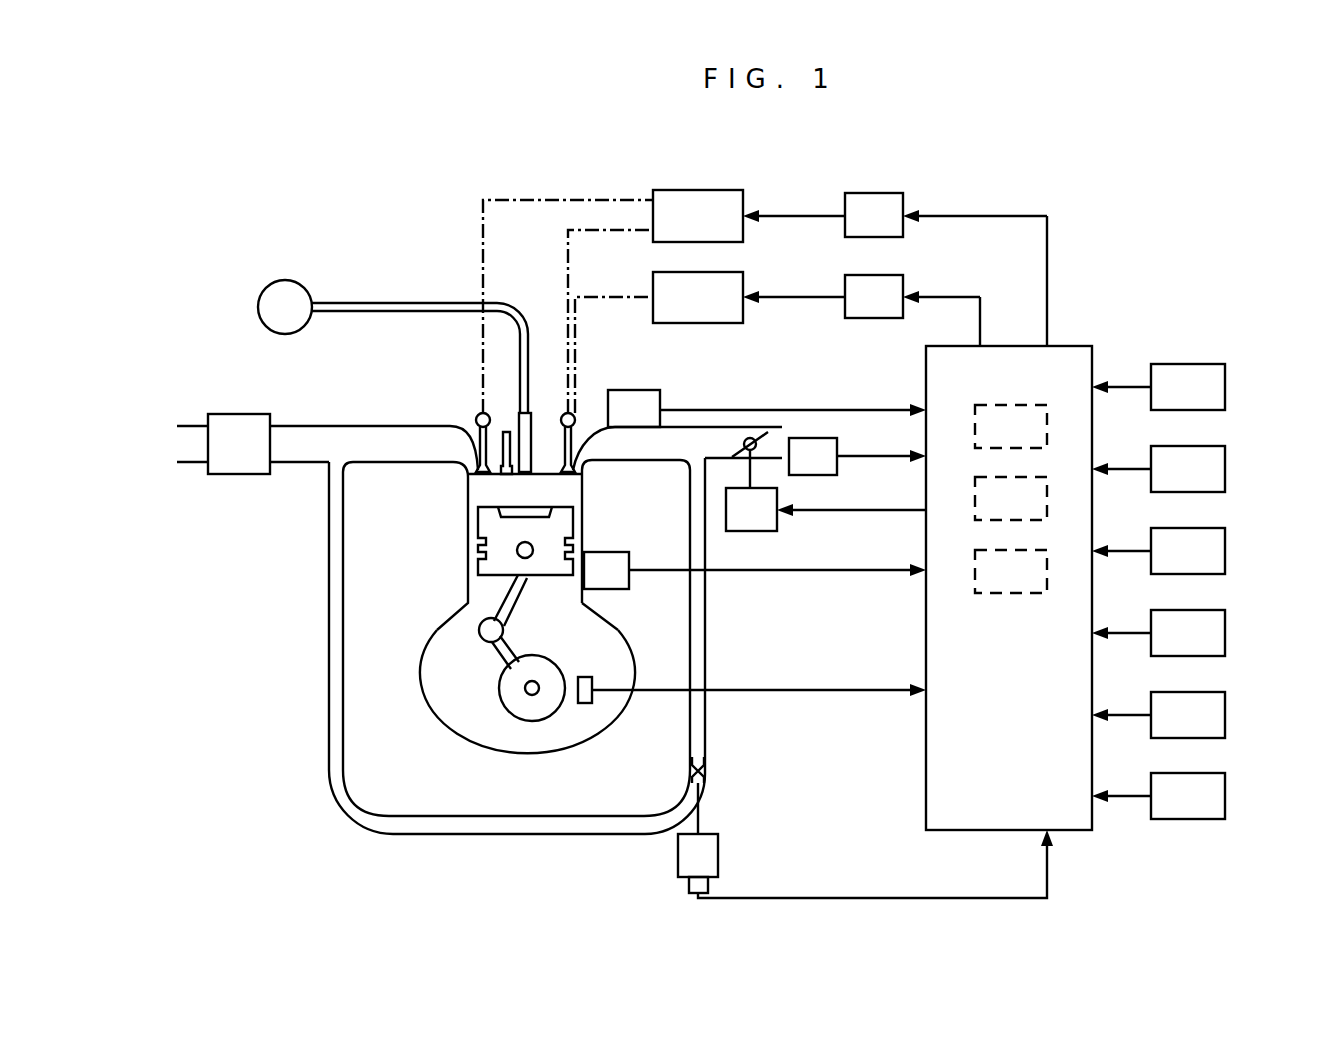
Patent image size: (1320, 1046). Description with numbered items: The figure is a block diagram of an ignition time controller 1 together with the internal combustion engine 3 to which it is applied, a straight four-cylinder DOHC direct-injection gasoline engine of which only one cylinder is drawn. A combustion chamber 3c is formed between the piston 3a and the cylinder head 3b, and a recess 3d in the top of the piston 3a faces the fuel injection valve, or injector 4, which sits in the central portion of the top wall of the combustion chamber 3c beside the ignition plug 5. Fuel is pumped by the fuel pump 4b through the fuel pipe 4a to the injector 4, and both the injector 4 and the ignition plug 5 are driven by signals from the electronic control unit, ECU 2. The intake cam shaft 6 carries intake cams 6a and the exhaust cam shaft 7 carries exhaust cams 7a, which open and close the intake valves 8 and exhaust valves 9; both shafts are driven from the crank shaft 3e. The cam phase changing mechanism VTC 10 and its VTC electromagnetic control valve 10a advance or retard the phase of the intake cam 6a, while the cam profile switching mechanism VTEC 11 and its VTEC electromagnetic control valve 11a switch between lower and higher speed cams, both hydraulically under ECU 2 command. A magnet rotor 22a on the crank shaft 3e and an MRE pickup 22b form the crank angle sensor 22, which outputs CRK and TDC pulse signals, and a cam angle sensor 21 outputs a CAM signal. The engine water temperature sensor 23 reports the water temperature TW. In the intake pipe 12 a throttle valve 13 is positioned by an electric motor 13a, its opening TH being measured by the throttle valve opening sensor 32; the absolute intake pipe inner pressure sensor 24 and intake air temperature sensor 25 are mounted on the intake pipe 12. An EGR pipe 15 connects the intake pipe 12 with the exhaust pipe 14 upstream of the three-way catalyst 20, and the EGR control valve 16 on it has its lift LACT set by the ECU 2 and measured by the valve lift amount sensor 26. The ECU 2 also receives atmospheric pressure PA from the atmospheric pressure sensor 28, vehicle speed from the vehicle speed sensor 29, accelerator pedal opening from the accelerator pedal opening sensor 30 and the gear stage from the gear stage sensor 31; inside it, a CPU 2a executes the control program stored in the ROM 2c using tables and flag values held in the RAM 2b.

The control system 1 is at (1115, 171).
The electronic control unit (ECU) 2 is at (978, 559).
The CPU 2a is at (1034, 551).
The RAM 2b is at (1034, 477).
The ROM 2c is at (1034, 406).
The internal combustion engine 3 is at (503, 696).
The piston 3a is at (476, 559).
The cylinder head 3b is at (563, 545).
The combustion chamber 3c is at (477, 488).
The recess 3d is at (476, 526).
The crank shaft 3e is at (466, 681).
The fuel injection valve (injector) 4 is at (535, 398).
The fuel pipe 4a is at (285, 276).
The fuel pump 4b is at (420, 322).
The ignition plug 5 is at (505, 410).
The intake cam shaft 6 is at (580, 393).
The intake cam 6a is at (610, 323).
The exhaust cam shaft 7 is at (452, 432).
The exhaust cam 7a is at (530, 307).
The intake valve 8 is at (599, 448).
The exhaust valve 9 is at (445, 447).
The cam phase changing mechanism (VTC) 10 is at (721, 279).
The VTC electromagnetic control valve 10a is at (861, 290).
The cam profile switching mechanism (VTEC) 11 is at (698, 188).
The VTEC electromagnetic control valve 11a is at (895, 242).
The intake pipe 12 is at (699, 410).
The throttle valve 13 is at (777, 420).
The electric motor 13a is at (826, 522).
The exhaust pipe 14 is at (313, 481).
The EGR pipe 15 is at (517, 684).
The EGR control valve 16 is at (655, 860).
The three-way catalyst 20 is at (239, 415).
The cam angle sensor 21 is at (1184, 372).
The crank angle sensor 22 is at (626, 793).
The magnet rotor 22a is at (556, 715).
The MRE pickup 22b is at (752, 726).
The engine water temperature sensor 23 is at (755, 596).
The absolute intake pipe inner pressure sensor 24 is at (767, 386).
The intake air temperature sensor 25 is at (1184, 454).
The valve lift amount sensor 26 is at (837, 881).
The atmospheric pressure sensor 28 is at (1184, 536).
The vehicle speed sensor 29 is at (1184, 618).
The accelerator pedal opening sensor 30 is at (1184, 700).
The gear stage sensor 31 is at (1184, 782).
The throttle valve opening sensor 32 is at (857, 467).